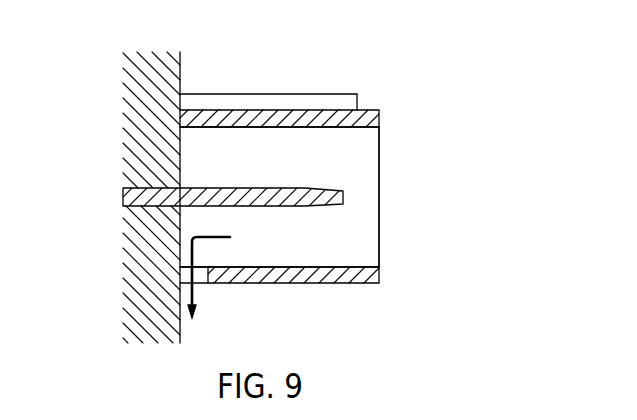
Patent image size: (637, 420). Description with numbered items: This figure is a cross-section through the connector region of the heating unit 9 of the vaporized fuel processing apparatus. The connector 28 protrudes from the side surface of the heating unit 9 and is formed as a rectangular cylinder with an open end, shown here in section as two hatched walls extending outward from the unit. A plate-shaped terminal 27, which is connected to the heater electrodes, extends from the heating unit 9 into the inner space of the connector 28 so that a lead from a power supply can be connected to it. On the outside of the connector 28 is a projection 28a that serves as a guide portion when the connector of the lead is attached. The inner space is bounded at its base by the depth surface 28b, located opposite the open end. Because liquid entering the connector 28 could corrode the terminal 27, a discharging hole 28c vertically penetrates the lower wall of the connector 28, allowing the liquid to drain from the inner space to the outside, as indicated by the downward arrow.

The heating unit 9 is at (182, 78).
The terminal 27 is at (298, 195).
The connector 28 is at (368, 118).
The projection 28a is at (311, 103).
The depth surface 28b is at (180, 162).
The discharging hole 28c is at (203, 281).